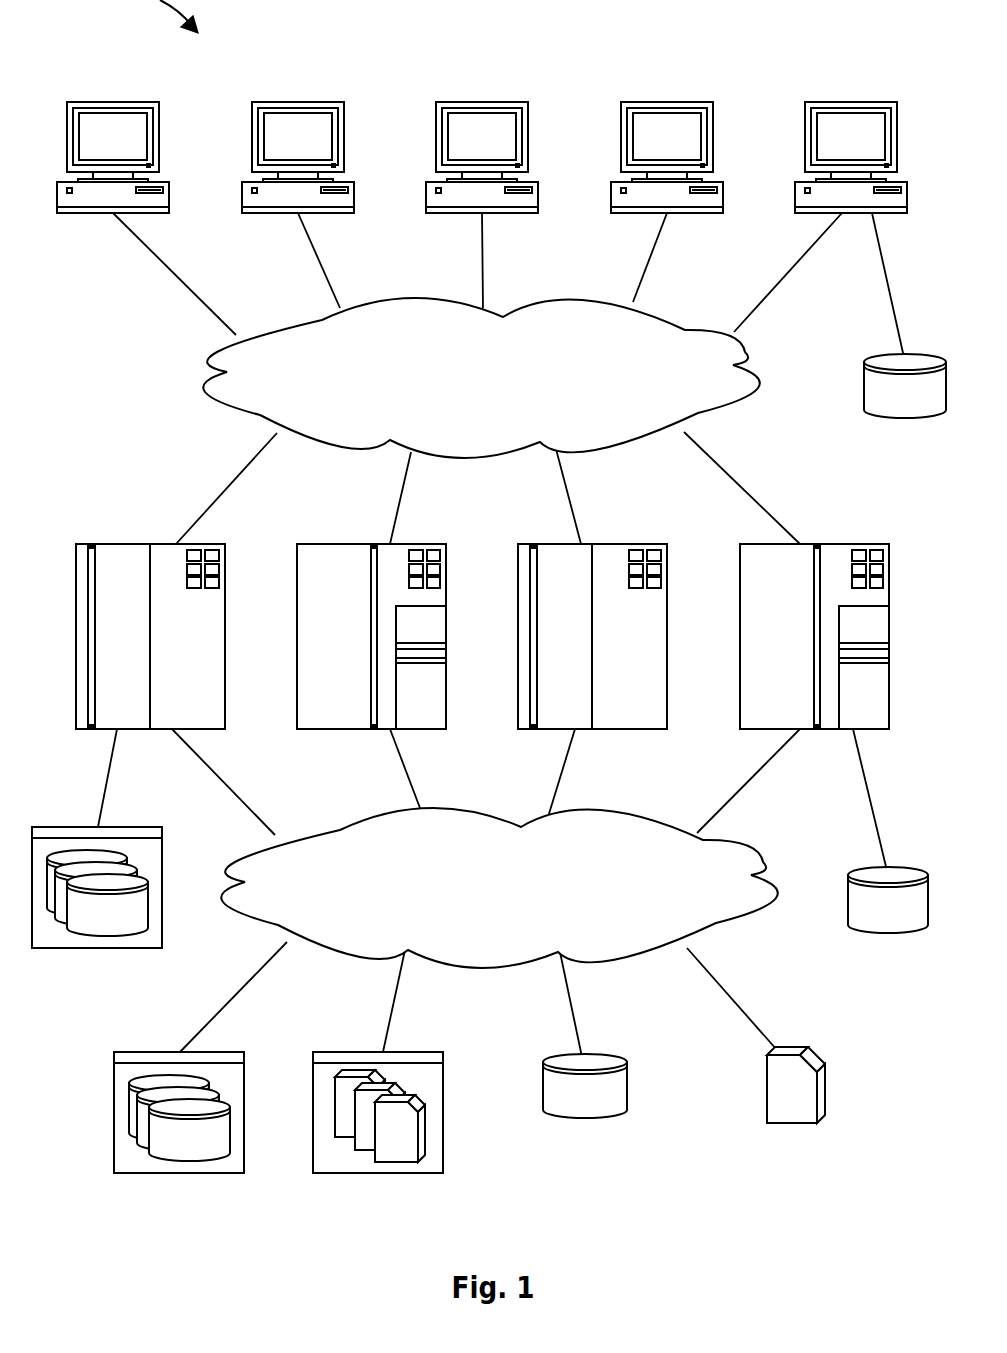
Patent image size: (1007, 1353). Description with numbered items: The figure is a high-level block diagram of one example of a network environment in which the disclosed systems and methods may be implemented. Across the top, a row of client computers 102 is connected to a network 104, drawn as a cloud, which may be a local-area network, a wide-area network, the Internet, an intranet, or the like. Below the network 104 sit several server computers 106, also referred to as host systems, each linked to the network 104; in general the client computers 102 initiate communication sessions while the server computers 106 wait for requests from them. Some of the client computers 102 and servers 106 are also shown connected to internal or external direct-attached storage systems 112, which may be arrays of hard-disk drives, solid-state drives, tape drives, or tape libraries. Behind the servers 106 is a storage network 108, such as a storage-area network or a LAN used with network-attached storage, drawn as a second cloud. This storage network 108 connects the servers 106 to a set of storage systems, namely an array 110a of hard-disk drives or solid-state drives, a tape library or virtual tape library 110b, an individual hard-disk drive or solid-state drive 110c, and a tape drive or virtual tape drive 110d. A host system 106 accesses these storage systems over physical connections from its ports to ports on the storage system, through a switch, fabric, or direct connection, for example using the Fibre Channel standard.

The client computer 102 is at (482, 157).
The network 104 is at (466, 403).
The server computer 106 is at (482, 636).
The storage network 108 is at (484, 913).
The array of hard-disk drives or solid-state drives 110a is at (178, 1173).
The tape library 110b is at (380, 1173).
The individual hard-disk drive 110c is at (585, 1118).
The tape drive 110d is at (791, 1123).
The direct-attached storage system 112 is at (906, 418).